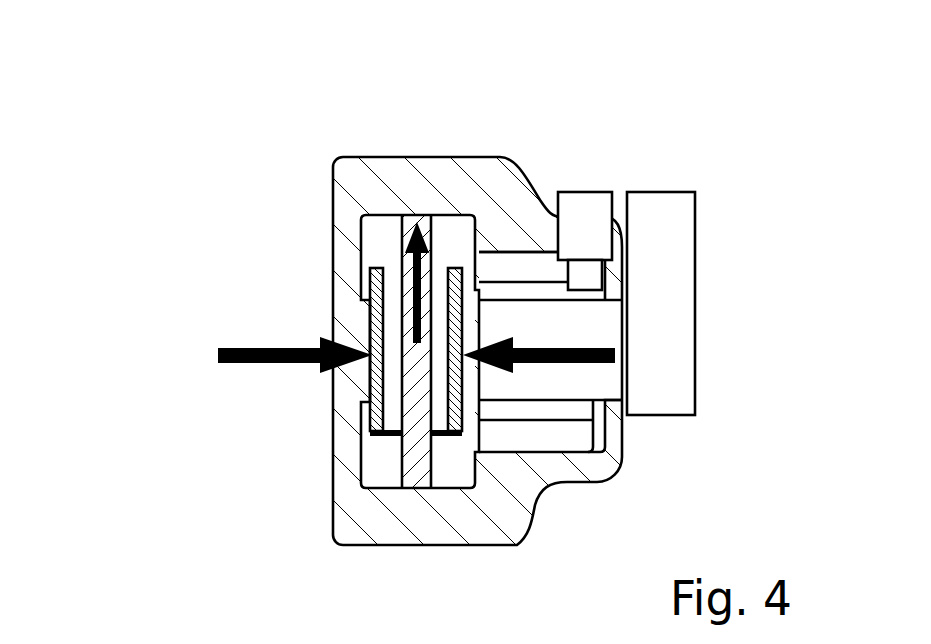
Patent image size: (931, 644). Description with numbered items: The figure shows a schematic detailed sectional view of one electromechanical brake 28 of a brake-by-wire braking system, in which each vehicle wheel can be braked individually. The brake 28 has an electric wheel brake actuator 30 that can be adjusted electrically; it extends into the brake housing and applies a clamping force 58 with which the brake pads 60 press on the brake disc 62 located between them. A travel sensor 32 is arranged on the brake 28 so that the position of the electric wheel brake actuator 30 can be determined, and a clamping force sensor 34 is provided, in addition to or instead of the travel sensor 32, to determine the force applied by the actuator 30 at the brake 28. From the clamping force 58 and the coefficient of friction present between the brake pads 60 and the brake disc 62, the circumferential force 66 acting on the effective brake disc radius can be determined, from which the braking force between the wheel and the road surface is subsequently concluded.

The brake 28 is at (188, 153).
The wheel brake actuator 30 is at (570, 377).
The travel sensor 32 is at (590, 217).
The clamping force sensor 34 is at (467, 306).
The clamping force 58 is at (298, 347).
The brake pads 60 is at (387, 378).
The brake disc 62 is at (410, 458).
The circumferential force 66 is at (401, 278).